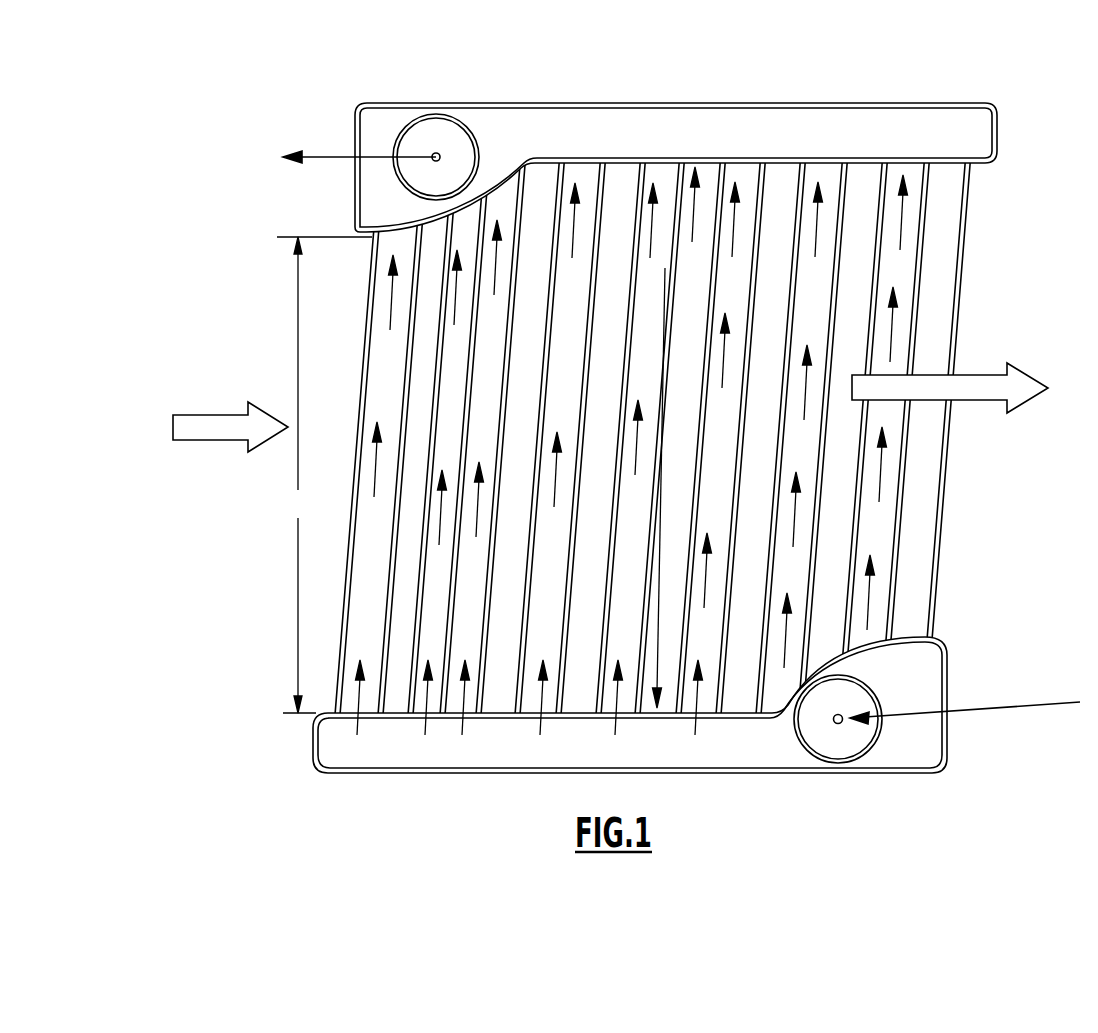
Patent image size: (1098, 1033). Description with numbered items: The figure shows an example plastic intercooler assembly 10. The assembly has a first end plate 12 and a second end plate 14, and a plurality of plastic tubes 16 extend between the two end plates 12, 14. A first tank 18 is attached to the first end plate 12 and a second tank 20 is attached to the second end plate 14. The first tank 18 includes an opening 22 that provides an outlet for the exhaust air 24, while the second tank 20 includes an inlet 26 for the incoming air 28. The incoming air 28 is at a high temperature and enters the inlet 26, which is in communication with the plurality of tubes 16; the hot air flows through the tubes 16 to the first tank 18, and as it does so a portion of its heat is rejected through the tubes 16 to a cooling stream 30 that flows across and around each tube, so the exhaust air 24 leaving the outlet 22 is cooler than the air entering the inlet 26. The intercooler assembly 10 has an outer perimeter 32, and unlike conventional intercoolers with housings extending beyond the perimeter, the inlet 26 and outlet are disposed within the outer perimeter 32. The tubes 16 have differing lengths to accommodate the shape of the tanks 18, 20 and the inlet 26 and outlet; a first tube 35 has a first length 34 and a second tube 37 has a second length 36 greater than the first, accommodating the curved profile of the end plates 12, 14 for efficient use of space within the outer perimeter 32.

The intercooler assembly 10 is at (1002, 232).
The first end plate 12 is at (948, 162).
The second end plate 14 is at (908, 640).
The plastic tubes 16 is at (937, 455).
The first tank 18 is at (927, 122).
The second tank 20 is at (912, 753).
The opening 22 is at (473, 130).
The exhaust air 24 is at (327, 153).
The inlet 26 is at (835, 760).
The incoming air 28 is at (1005, 710).
The cooling stream 30 is at (227, 430).
The outer perimeter 32 is at (312, 763).
The first length 34 is at (324, 475).
The first tube 35 is at (367, 580).
The second length 36 is at (632, 451).
The second tube 37 is at (697, 466).